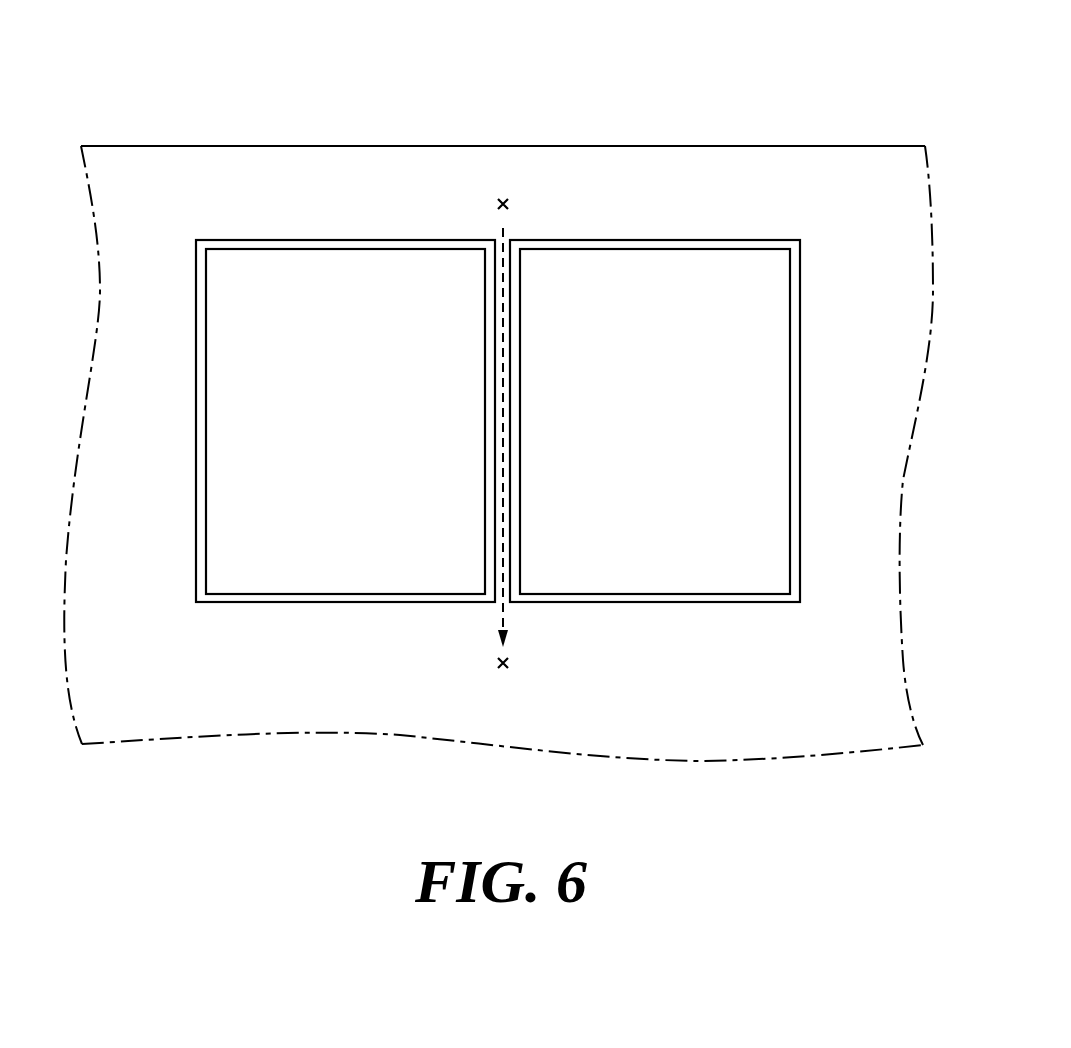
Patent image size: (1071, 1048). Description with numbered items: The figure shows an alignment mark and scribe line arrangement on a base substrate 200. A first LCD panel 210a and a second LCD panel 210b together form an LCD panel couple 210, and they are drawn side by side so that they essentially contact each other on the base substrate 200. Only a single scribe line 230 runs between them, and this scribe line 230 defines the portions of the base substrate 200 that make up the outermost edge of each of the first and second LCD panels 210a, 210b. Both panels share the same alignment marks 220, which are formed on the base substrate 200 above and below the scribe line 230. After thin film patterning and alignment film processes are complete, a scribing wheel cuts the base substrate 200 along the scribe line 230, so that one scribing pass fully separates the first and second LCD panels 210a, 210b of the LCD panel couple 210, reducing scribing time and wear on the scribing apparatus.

The base substrate 200 is at (825, 138).
The LCD panel couple 210 is at (610, 68).
The first LCD panel 210a is at (400, 238).
The second LCD panel 210b is at (610, 238).
The alignment marks 220 is at (503, 672).
The scribe line 230 is at (503, 606).